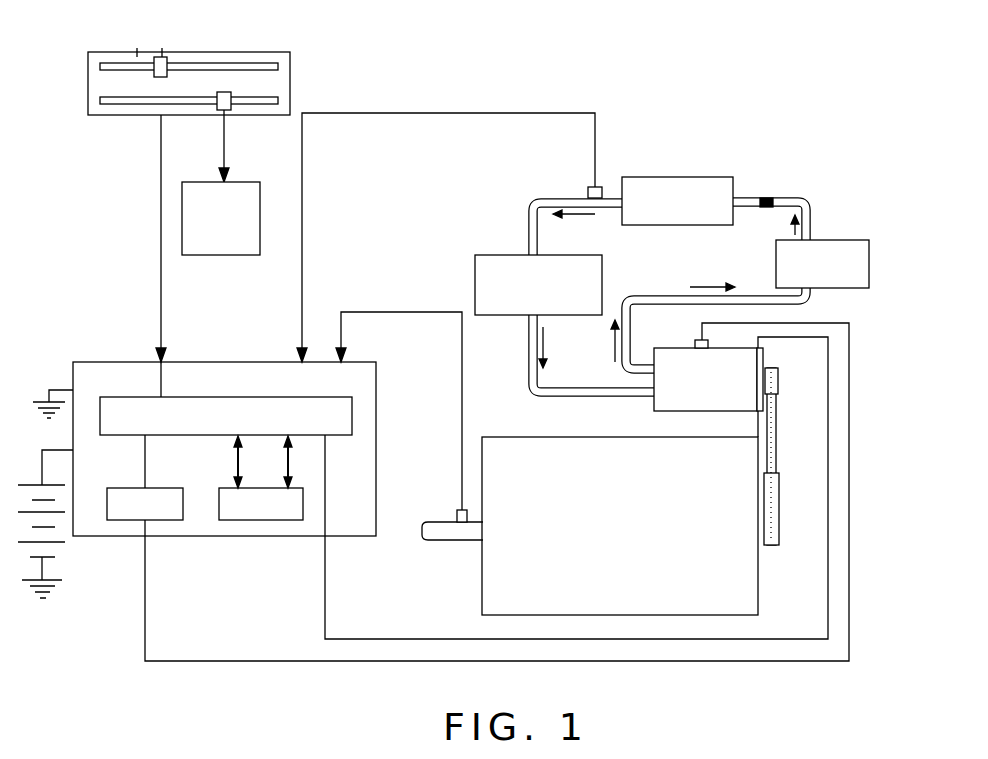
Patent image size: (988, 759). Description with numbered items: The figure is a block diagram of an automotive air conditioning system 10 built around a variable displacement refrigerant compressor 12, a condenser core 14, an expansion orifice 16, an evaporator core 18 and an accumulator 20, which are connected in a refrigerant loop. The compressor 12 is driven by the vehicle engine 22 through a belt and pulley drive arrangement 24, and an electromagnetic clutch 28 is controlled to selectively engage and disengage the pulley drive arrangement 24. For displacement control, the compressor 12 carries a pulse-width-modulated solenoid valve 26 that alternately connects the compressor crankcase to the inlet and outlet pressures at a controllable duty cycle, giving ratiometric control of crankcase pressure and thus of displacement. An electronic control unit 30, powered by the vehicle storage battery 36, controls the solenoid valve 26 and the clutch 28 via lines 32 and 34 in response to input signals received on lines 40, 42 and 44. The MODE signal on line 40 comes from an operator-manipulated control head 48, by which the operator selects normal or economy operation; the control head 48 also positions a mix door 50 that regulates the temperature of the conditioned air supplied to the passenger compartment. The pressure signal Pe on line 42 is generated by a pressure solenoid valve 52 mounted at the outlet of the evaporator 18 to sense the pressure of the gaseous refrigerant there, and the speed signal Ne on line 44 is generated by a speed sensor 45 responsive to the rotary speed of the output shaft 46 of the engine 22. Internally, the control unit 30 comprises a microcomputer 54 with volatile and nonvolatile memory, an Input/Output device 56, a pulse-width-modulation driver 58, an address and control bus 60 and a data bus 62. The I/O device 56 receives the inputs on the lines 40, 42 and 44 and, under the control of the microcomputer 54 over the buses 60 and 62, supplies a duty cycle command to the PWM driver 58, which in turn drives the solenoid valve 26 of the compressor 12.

The automotive air conditioning system 10 is at (495, 176).
The variable displacement refrigerant compressor 12 is at (668, 395).
The condenser core 14 is at (790, 280).
The expansion orifice 16 is at (770, 197).
The evaporator core 18 is at (688, 180).
The accumulator 20 is at (503, 256).
The vehicle engine 22 is at (572, 447).
The belt and pulley drive arrangement 24 is at (790, 458).
The pulse-width-modulated solenoid valve 26 is at (697, 343).
The electromagnetic clutch 28 is at (762, 360).
The electronic control unit 30 is at (200, 538).
The line 32 is at (640, 660).
The line 34 is at (465, 640).
The vehicle storage battery 36 is at (55, 543).
The line 40 is at (160, 290).
The line 42 is at (302, 232).
The line 44 is at (397, 310).
The speed sensor 45 is at (458, 512).
The output shaft 46 is at (425, 525).
The control head 48 is at (280, 82).
The mix door 50 is at (228, 255).
The pressure solenoid valve 52 is at (588, 190).
The microcomputer 54 is at (236, 513).
The Input/Output device 56 is at (292, 405).
The pulse-width-modulation driver 58 is at (112, 512).
The address and control bus 60 is at (237, 462).
The data bus 62 is at (290, 462).